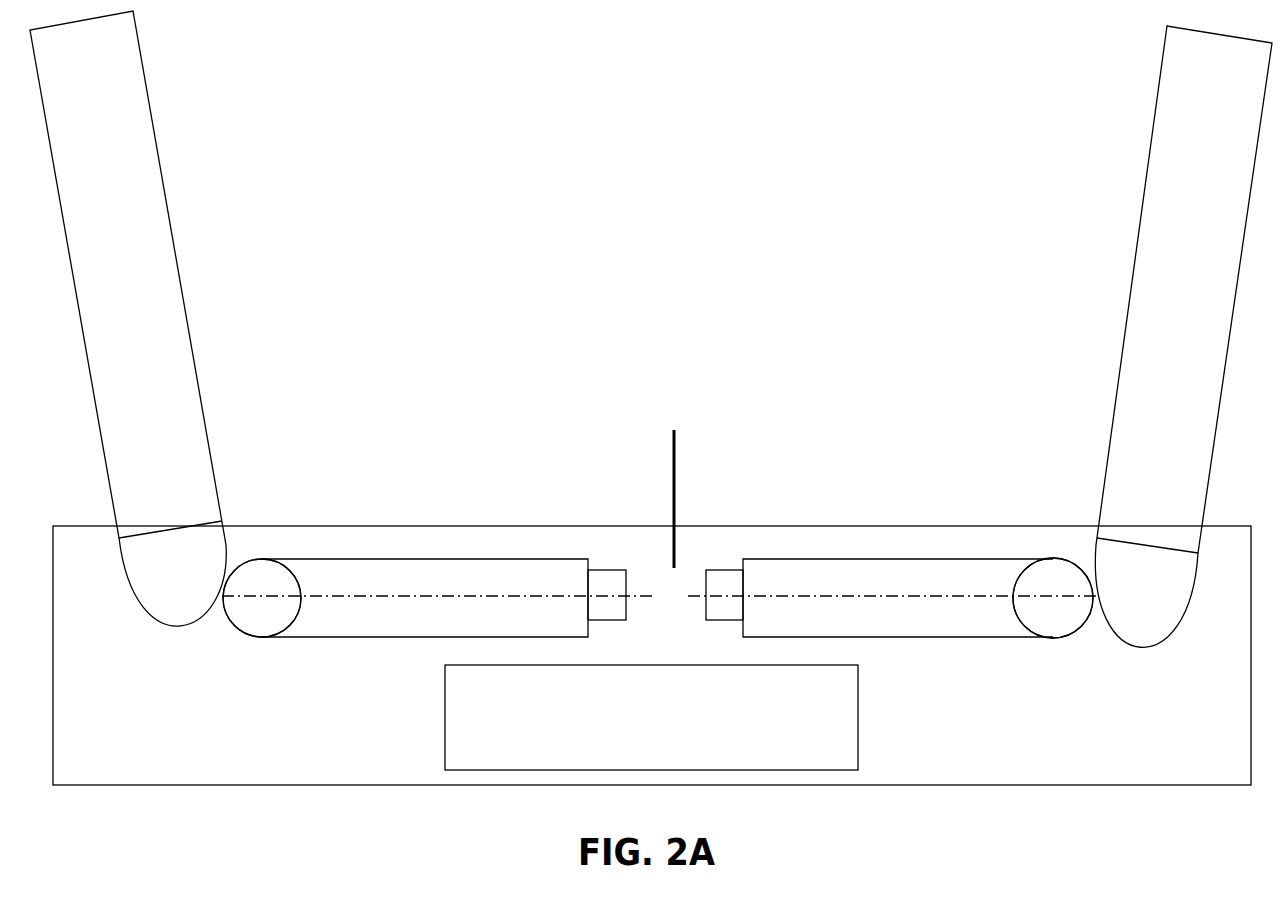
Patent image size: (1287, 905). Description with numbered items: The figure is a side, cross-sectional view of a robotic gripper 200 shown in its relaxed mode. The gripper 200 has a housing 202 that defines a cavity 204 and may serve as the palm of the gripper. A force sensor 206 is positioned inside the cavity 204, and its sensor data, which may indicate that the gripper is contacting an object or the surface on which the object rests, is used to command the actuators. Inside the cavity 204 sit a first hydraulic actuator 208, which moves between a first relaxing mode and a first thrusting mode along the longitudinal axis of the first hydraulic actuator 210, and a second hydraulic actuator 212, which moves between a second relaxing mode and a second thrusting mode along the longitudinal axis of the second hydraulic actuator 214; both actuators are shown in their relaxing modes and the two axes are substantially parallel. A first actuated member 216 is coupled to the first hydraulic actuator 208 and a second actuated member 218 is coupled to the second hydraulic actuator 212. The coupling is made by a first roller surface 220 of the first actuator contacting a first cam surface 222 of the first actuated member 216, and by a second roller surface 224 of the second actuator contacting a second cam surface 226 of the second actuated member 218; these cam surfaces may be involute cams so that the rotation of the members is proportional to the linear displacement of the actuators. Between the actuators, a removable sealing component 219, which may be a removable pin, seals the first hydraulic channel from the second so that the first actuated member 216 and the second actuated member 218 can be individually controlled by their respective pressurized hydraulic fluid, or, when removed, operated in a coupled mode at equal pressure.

The gripper 200 is at (402, 162).
The housing 202 is at (840, 526).
The cavity 204 is at (120, 765).
The force sensor 206 is at (847, 728).
The first hydraulic actuator 208 is at (382, 572).
The longitudinal axis of the first hydraulic actuator 210 is at (522, 595).
The second hydraulic actuator 212 is at (848, 573).
The longitudinal axis of the second hydraulic actuator 214 is at (825, 595).
The first actuated member 216 is at (163, 264).
The second actuated member 218 is at (1160, 227).
The removable sealing component 219 is at (674, 450).
The first roller surface 220 is at (270, 572).
The first cam surface 222 is at (225, 547).
The second roller surface 224 is at (1050, 585).
The second cam surface 226 is at (1095, 557).